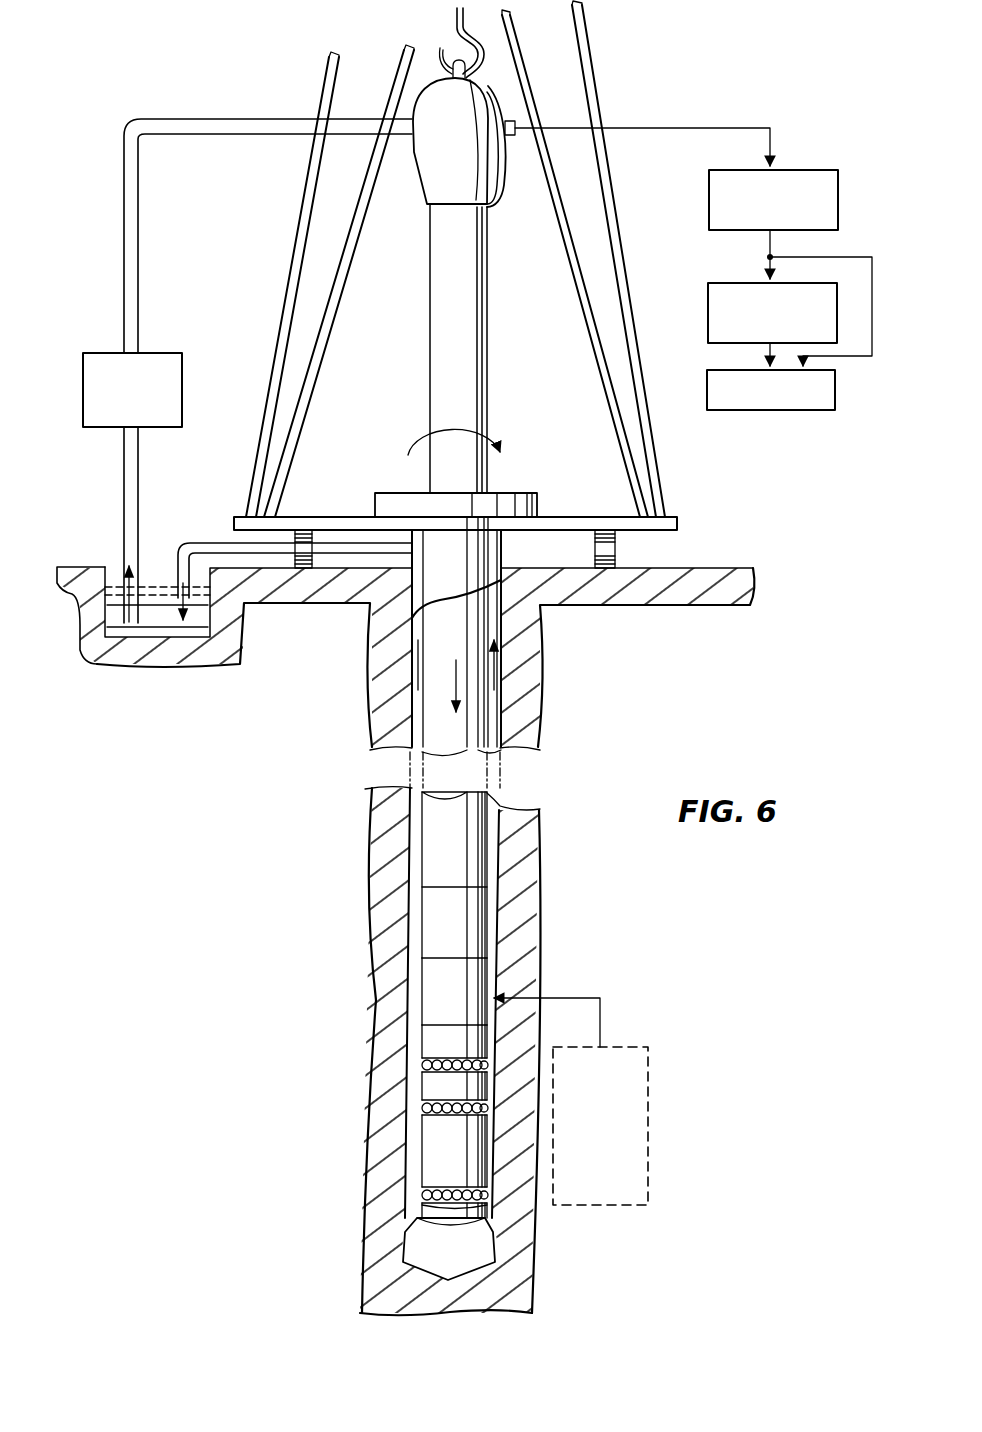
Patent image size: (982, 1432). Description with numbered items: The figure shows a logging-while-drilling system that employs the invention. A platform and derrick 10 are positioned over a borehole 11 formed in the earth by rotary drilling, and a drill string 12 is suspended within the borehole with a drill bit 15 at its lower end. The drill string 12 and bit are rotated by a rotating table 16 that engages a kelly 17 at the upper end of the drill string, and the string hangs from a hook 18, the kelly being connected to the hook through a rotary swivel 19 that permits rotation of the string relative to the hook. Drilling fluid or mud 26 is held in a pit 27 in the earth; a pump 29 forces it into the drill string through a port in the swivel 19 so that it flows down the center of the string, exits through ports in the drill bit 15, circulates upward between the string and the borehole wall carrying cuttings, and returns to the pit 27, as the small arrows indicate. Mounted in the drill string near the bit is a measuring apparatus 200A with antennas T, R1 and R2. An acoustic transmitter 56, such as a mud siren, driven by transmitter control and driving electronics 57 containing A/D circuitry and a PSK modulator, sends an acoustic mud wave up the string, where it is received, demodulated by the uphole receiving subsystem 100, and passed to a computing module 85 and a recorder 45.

The platform and derrick 10 is at (686, 530).
The borehole 11 is at (493, 907).
The drill string 12 is at (457, 689).
The drill bit 15 is at (605, 1207).
The rotating table 16 is at (541, 498).
The kelly 17 is at (434, 360).
The hook 18 is at (457, 18).
The rotary swivel 19 is at (470, 165).
The drilling fluid or mud 26 is at (197, 637).
The pit 27 is at (100, 616).
The pump 29 is at (185, 384).
The recorder 45 is at (707, 377).
The acoustic transmitter 56 is at (428, 915).
The transmitter control and driving electronics 57 is at (432, 990).
The computing module 85 is at (708, 300).
The uphole receiving subsystem 100 is at (833, 174).
The measuring apparatus 200A is at (430, 1146).
The antenna R1 is at (422, 1102).
The antenna R2 is at (422, 1059).
The antenna T is at (422, 1193).